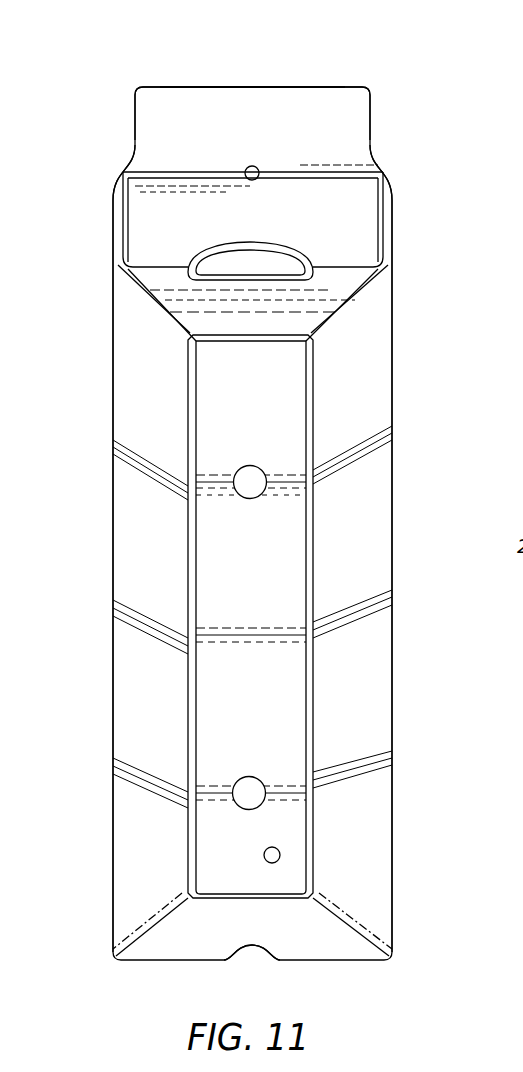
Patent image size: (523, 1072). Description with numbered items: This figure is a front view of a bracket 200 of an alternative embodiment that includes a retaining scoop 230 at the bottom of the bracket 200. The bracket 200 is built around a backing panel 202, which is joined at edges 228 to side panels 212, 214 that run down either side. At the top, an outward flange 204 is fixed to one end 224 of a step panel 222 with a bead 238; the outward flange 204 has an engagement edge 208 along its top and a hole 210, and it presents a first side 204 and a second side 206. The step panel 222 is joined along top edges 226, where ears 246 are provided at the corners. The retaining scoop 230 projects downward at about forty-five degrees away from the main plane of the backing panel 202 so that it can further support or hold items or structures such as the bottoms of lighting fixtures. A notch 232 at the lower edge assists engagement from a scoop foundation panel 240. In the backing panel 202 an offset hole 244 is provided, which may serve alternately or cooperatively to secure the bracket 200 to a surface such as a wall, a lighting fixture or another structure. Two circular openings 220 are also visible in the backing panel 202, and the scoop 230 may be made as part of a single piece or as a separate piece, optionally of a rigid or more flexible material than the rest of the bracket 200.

The bracket 200 is at (183, 56).
The backing panel 202 is at (215, 377).
The outward flange 204 is at (370, 128).
The second side 206 is at (290, 116).
The engagement edge 208 is at (242, 86).
The hole 210 is at (250, 166).
The side panel 212 is at (363, 720).
The side panel 214 is at (152, 728).
The circular openings 220 is at (252, 465).
The step panel 222 is at (197, 317).
The edge 224 is at (127, 267).
The top edges 226 is at (340, 310).
The edges 228 is at (308, 528).
The retaining scoop 230 is at (188, 543).
The notch 232 is at (244, 946).
The bead 238 is at (260, 242).
The scoop foundation panel 240 is at (190, 952).
The offset hole 244 is at (266, 863).
The ears 246 is at (127, 173).